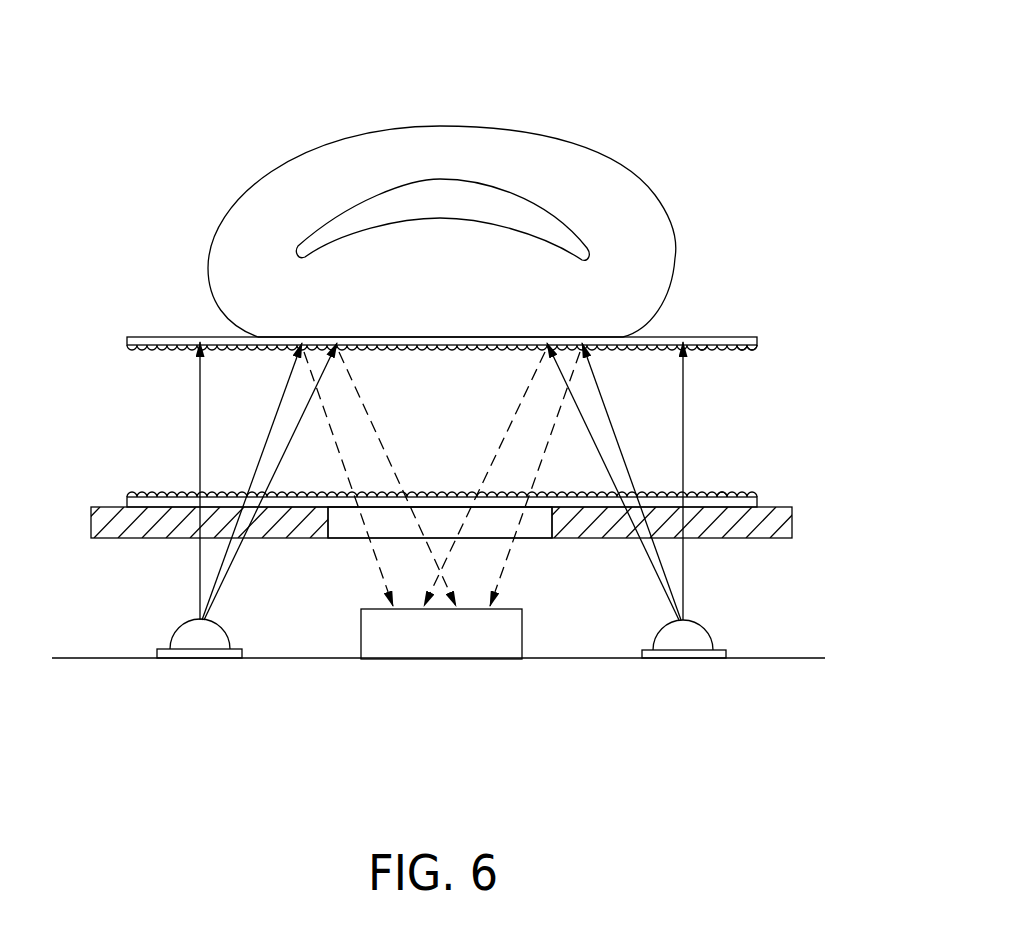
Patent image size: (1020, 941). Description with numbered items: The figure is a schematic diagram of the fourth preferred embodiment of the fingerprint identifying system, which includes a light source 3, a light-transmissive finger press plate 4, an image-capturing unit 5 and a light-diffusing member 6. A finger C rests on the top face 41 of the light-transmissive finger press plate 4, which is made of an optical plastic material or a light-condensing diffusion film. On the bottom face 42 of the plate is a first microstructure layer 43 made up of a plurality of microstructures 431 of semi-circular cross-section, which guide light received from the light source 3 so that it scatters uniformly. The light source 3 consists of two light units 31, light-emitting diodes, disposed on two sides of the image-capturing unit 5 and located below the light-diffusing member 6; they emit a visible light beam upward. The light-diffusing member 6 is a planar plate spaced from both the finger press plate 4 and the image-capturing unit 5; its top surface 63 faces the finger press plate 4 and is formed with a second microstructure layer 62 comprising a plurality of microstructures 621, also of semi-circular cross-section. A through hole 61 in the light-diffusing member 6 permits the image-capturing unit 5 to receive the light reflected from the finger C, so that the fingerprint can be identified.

The finger C is at (600, 158).
The light-transmissive finger press plate 4 is at (443, 326).
The top face 41 is at (733, 338).
The bottom face 42 is at (740, 358).
The first microstructure layer 43 is at (177, 358).
The microstructures 431 is at (698, 355).
The light-diffusing member 6 is at (447, 521).
The through hole 61 is at (438, 523).
The second microstructure layer 62 is at (177, 487).
The microstructures 621 is at (720, 490).
The top surface 63 is at (767, 508).
The light source 3 is at (421, 565).
The light units 31 is at (180, 636).
The image-capturing unit 5 is at (440, 661).